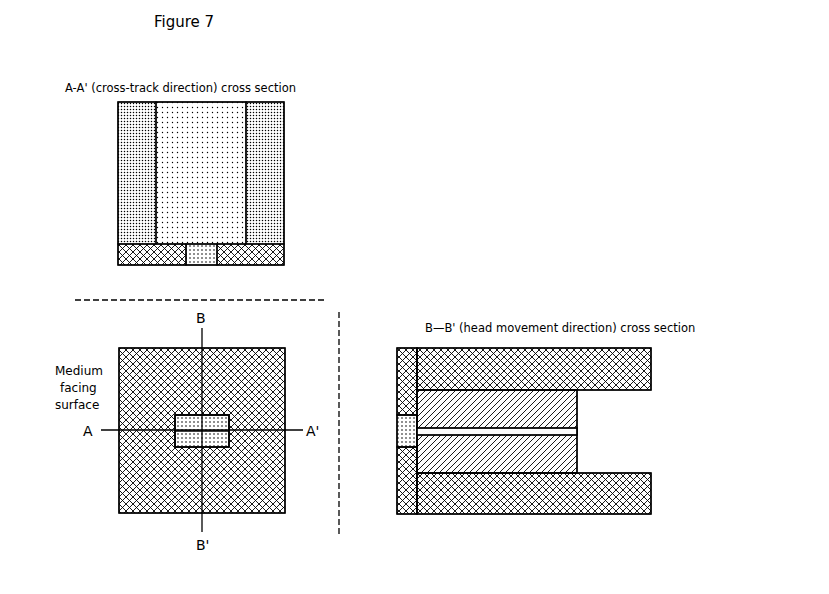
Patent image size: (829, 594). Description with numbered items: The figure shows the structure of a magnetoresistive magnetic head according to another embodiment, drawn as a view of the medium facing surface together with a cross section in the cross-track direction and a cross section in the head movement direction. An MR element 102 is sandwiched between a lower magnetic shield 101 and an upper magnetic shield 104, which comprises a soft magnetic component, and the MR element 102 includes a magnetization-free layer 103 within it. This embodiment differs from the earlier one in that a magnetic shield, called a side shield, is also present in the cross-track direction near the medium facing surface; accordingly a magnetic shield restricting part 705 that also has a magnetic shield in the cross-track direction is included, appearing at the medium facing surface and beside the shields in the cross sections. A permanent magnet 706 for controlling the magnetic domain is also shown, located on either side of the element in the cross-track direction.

The lower magnetic shield 101 is at (651, 495).
The MR element 102 is at (579, 392).
The magnetization-free layer 103 is at (577, 431).
The upper magnetic shield 104 is at (651, 367).
The magnetic shield restricting part 705 is at (284, 247).
The permanent magnet 706 is at (118, 210).